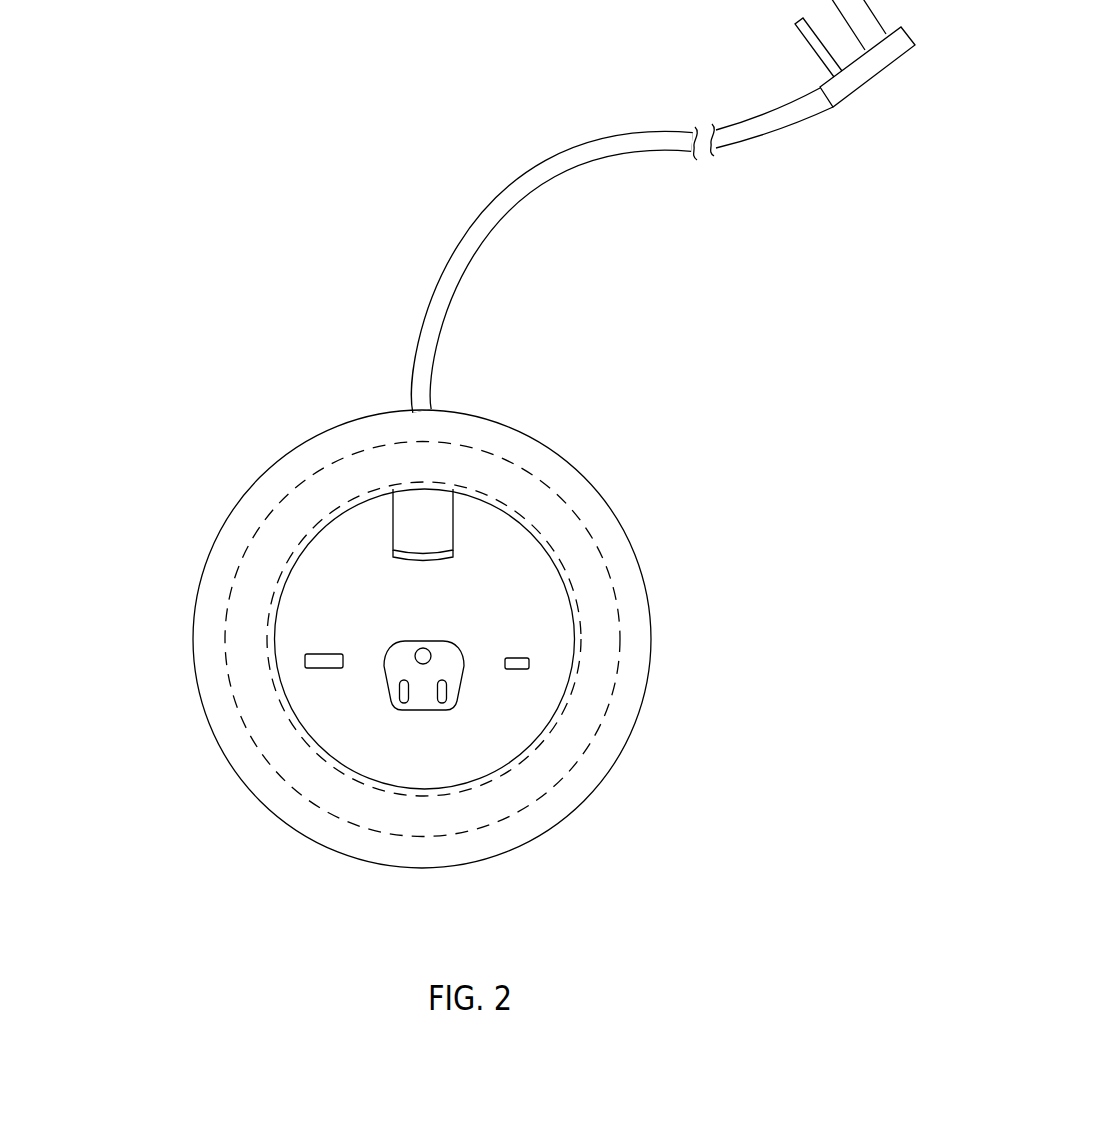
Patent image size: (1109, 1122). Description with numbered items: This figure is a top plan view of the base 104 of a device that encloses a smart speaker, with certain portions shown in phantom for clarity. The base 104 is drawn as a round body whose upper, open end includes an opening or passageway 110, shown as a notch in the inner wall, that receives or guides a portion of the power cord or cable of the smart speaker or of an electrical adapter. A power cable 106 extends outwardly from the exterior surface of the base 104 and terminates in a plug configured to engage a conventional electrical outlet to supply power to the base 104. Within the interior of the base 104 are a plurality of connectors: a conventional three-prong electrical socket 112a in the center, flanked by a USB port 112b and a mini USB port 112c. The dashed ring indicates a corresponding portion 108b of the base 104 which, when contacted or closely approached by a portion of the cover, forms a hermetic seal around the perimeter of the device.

The base 104 is at (583, 803).
The power cable 106 is at (780, 130).
The corresponding portion of the base 108b is at (238, 657).
The opening or passageway 110 is at (418, 522).
The three-prong electrical socket 112a is at (423, 713).
The USB port 112b is at (320, 672).
The mini USB port 112c is at (512, 674).